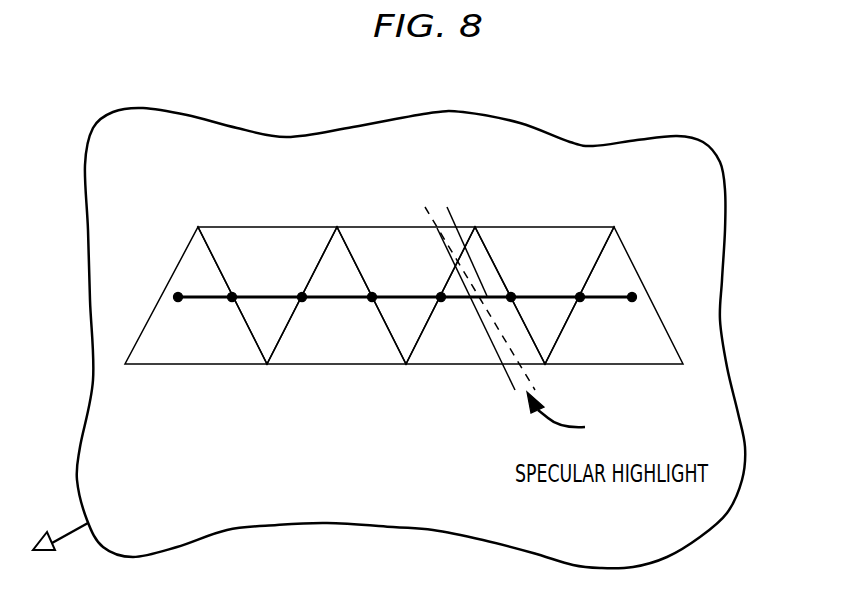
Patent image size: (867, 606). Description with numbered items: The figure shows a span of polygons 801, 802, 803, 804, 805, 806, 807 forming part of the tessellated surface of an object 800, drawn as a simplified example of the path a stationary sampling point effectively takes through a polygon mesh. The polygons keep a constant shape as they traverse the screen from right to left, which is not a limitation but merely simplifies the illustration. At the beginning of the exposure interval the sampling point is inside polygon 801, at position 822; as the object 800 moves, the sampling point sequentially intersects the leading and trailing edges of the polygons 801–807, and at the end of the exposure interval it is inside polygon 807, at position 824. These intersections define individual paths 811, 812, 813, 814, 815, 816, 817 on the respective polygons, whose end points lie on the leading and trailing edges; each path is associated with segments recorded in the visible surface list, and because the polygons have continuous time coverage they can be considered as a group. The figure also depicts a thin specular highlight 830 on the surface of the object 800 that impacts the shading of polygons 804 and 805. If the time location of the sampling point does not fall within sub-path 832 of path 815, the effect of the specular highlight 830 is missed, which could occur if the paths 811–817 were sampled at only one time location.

The object 800 is at (572, 138).
The polygon 801 is at (188, 352).
The polygon 802 is at (262, 227).
The polygon 803 is at (372, 352).
The polygon 804 is at (400, 227).
The polygon 805 is at (453, 353).
The polygon 806 is at (538, 227).
The polygon 807 is at (652, 353).
The individual path 811 is at (200, 300).
The individual path 812 is at (263, 295).
The individual path 813 is at (318, 300).
The individual path 814 is at (400, 293).
The individual path 815 is at (458, 299).
The individual path 816 is at (540, 294).
The individual path 817 is at (590, 300).
The position 822 is at (176, 296).
The position 824 is at (634, 296).
The specular highlight 830 is at (575, 418).
The sub-path 832 is at (487, 302).